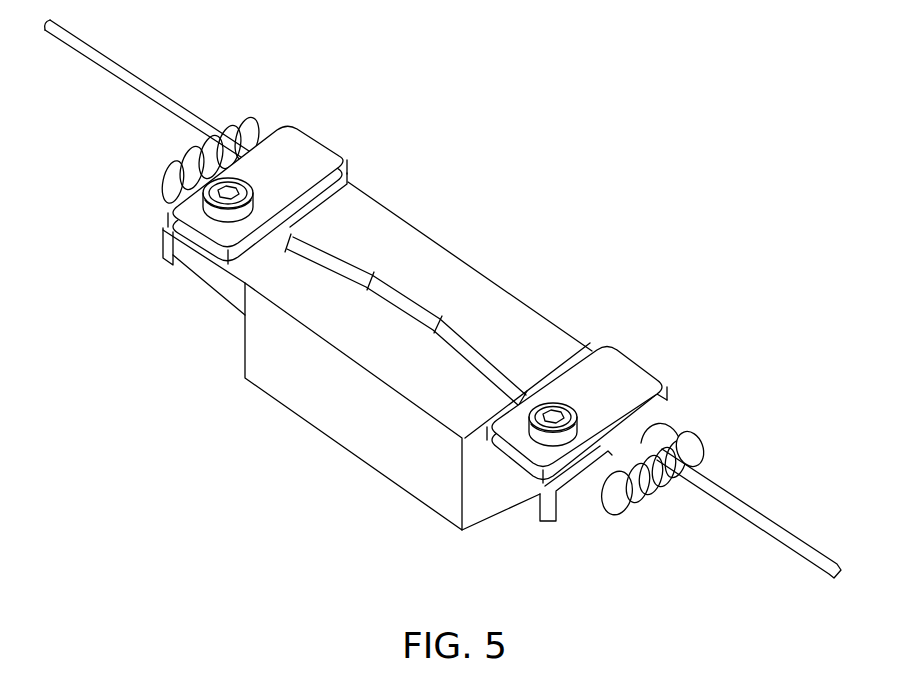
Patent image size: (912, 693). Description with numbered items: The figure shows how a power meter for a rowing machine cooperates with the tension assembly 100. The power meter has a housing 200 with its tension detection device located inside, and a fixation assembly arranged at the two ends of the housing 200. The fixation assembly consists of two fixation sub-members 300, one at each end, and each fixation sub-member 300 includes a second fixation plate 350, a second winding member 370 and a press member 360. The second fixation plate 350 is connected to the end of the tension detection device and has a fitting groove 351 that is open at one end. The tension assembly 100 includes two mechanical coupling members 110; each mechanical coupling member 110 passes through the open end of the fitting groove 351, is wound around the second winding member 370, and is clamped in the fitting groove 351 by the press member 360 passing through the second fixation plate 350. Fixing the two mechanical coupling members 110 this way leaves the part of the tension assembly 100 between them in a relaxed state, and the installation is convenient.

The tension assembly 100 is at (432, 320).
The mechanical coupling member 110 is at (174, 262).
The housing 200 is at (360, 398).
The fixation sub-member 300 is at (782, 305).
The second fixation plate 350 is at (622, 367).
The fitting groove 351 is at (533, 497).
The press member 360 is at (577, 419).
The second winding member 370 is at (688, 450).